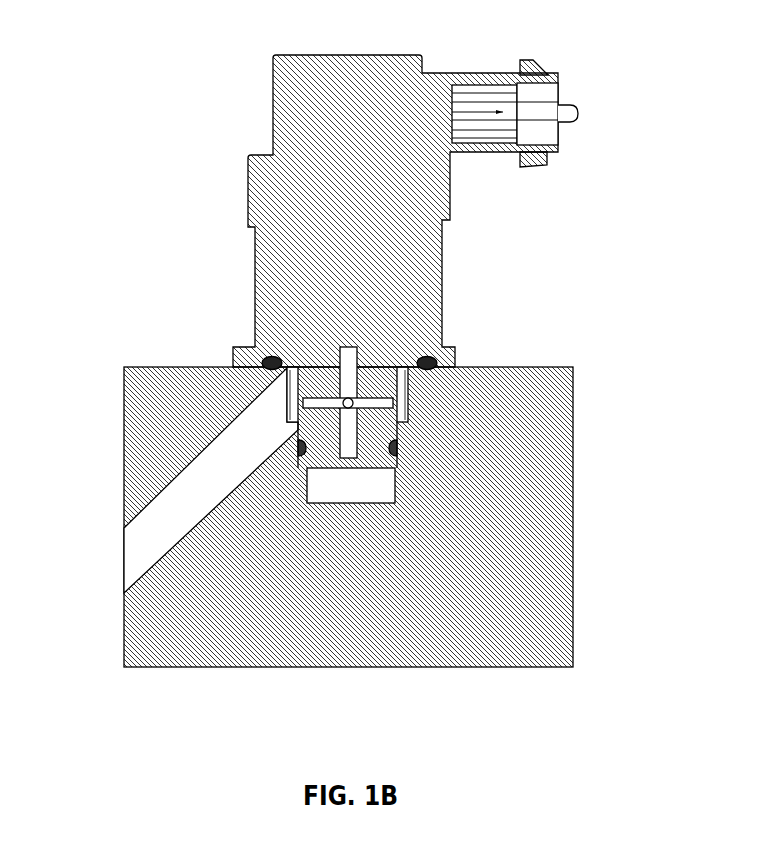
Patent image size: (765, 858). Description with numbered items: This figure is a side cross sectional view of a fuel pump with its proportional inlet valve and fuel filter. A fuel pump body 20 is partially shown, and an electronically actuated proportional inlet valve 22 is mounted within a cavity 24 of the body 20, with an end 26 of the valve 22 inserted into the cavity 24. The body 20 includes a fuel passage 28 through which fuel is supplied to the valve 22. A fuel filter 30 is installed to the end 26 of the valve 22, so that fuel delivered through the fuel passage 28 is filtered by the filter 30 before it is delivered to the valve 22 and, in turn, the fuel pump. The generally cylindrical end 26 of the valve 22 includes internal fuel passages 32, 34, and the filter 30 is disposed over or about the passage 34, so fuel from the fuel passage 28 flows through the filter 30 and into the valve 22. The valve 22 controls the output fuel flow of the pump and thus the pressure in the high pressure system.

The fuel pump body 20 is at (568, 450).
The electronically actuated proportional inlet valve 22 is at (273, 95).
The cavity 24 is at (370, 492).
The end 26 is at (320, 443).
The fuel passage 28 is at (122, 558).
The fuel filter 30 is at (410, 388).
The internal fuel passage 32 is at (348, 370).
The internal fuel passage 34 is at (372, 400).